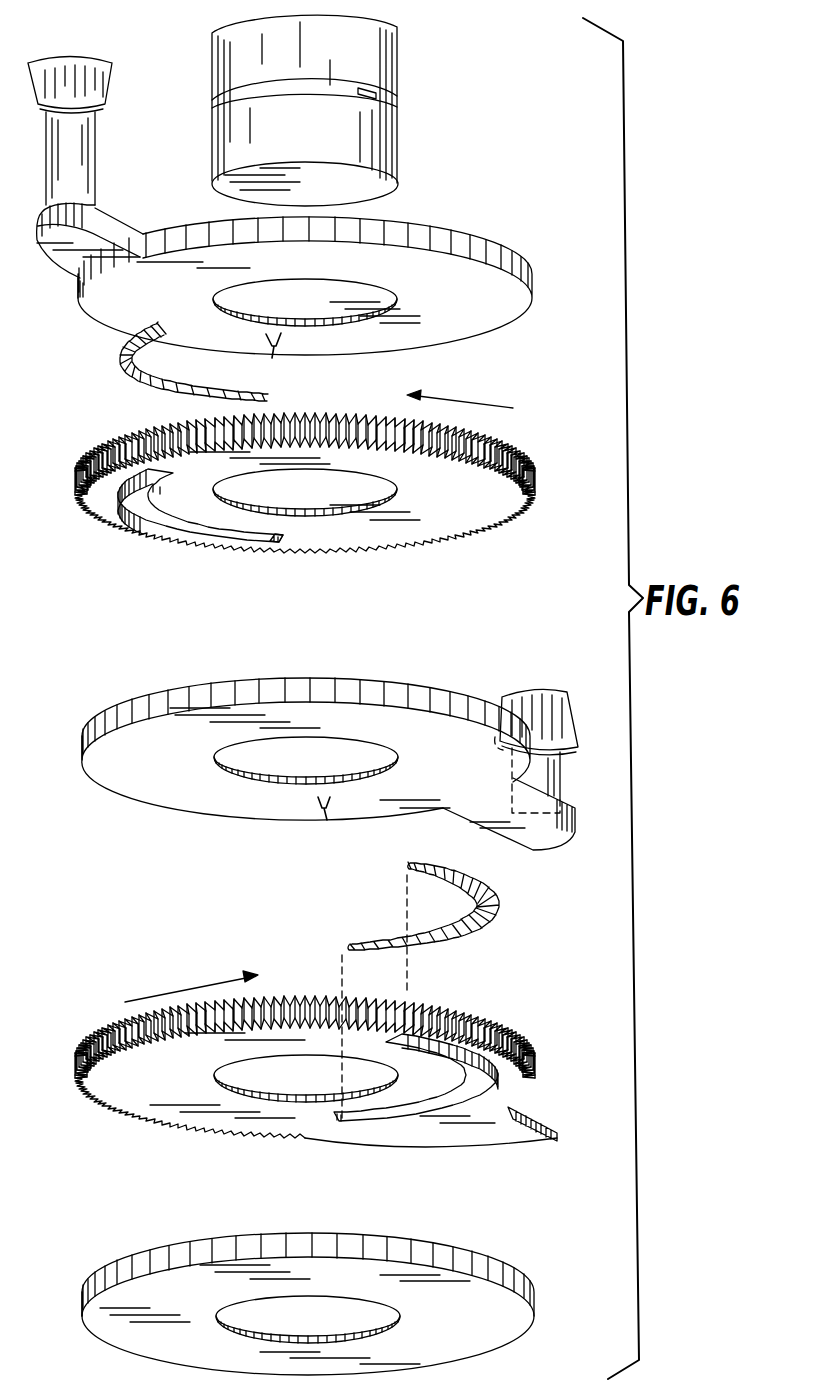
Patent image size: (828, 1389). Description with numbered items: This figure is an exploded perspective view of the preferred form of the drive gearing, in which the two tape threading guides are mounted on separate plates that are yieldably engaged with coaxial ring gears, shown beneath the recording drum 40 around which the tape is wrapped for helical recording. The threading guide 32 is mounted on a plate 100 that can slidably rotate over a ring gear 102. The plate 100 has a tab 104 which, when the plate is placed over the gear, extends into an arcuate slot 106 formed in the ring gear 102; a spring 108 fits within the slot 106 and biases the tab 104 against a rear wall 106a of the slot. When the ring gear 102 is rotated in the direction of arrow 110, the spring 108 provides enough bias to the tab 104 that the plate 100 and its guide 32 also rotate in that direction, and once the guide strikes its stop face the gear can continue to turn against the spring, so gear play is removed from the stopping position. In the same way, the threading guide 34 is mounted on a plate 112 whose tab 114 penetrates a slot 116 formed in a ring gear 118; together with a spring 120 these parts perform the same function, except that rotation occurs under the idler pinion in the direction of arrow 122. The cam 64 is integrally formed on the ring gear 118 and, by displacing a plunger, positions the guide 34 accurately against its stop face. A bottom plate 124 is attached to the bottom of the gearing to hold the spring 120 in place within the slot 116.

The threading guide 32 is at (110, 72).
The threading guide 34 is at (553, 693).
The recording drum 40 is at (397, 66).
The cam 64 is at (536, 1137).
The plate 100 is at (534, 297).
The ring gear 102 is at (536, 487).
The tab 104 is at (284, 352).
The arcuate slot 106 is at (162, 520).
The rear wall 106a is at (285, 540).
The spring 108 is at (140, 378).
The arrow 110 is at (480, 404).
The plate 112 is at (368, 682).
The tab 114 is at (314, 808).
The slot 116 is at (377, 1118).
The ring gear 118 is at (100, 1096).
The spring 120 is at (497, 893).
The arrow 122 is at (191, 983).
The bottom plate 124 is at (472, 1257).